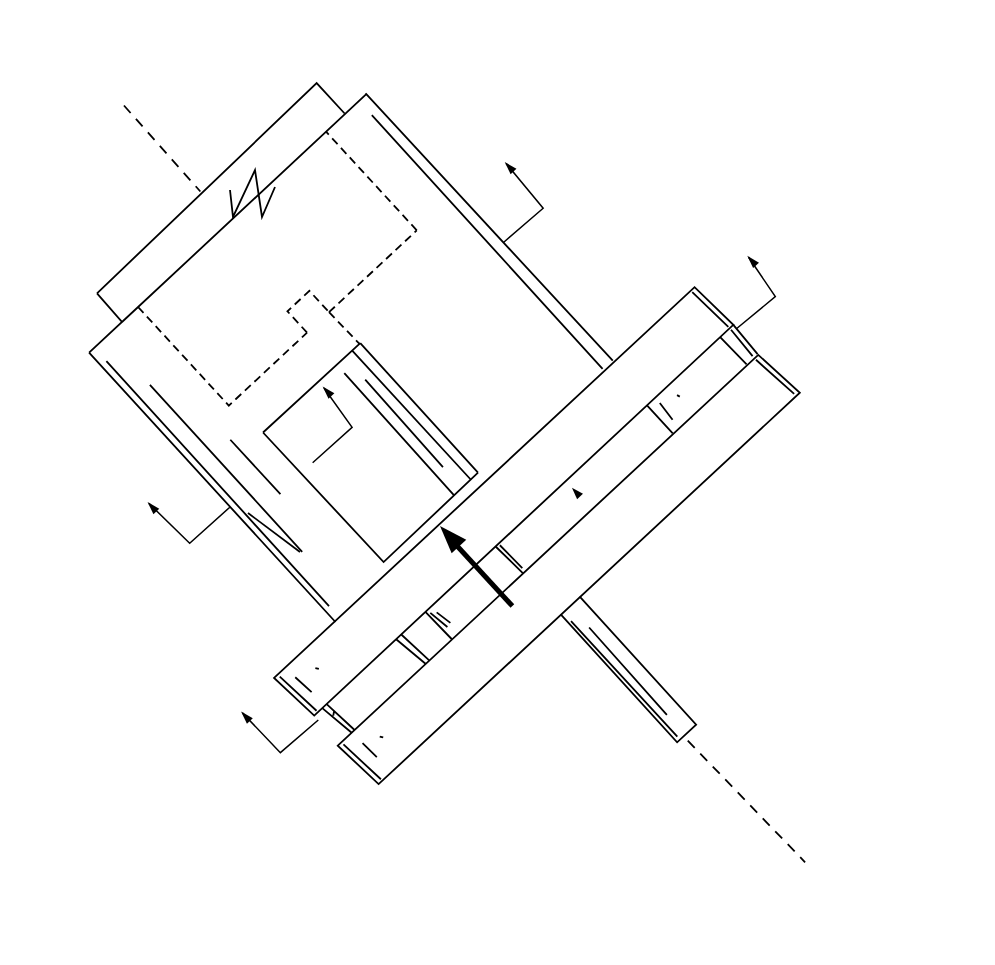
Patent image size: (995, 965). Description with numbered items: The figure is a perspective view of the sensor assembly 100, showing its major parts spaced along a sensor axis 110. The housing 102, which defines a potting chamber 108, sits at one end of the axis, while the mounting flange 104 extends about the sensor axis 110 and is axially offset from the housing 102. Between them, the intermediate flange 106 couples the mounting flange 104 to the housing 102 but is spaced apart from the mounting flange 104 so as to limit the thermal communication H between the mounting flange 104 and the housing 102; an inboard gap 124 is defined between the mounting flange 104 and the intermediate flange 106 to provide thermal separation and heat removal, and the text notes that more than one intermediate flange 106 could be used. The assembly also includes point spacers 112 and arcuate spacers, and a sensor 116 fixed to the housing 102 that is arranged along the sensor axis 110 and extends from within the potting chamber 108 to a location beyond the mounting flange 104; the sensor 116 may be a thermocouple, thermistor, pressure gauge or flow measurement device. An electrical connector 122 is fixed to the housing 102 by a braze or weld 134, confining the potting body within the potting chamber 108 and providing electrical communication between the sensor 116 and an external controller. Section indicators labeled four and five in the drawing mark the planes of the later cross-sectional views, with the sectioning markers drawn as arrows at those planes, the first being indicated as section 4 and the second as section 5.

The sensor assembly 100 is at (147, 670).
The housing 102 is at (277, 269).
The mounting flange 104 is at (569, 569).
The intermediate flange 106 is at (503, 501).
The potting chamber 108 is at (371, 181).
The sensor axis 110 is at (463, 485).
The point spacers 112 is at (540, 530).
The sensor 116 is at (628, 670).
The electrical connector 122 is at (337, 341).
The inboard gap 124 is at (545, 526).
The braze or weld 134 is at (272, 165).
The section line 4 is at (449, 434).
The section line 5 is at (346, 354).
The thermal communication H is at (477, 565).